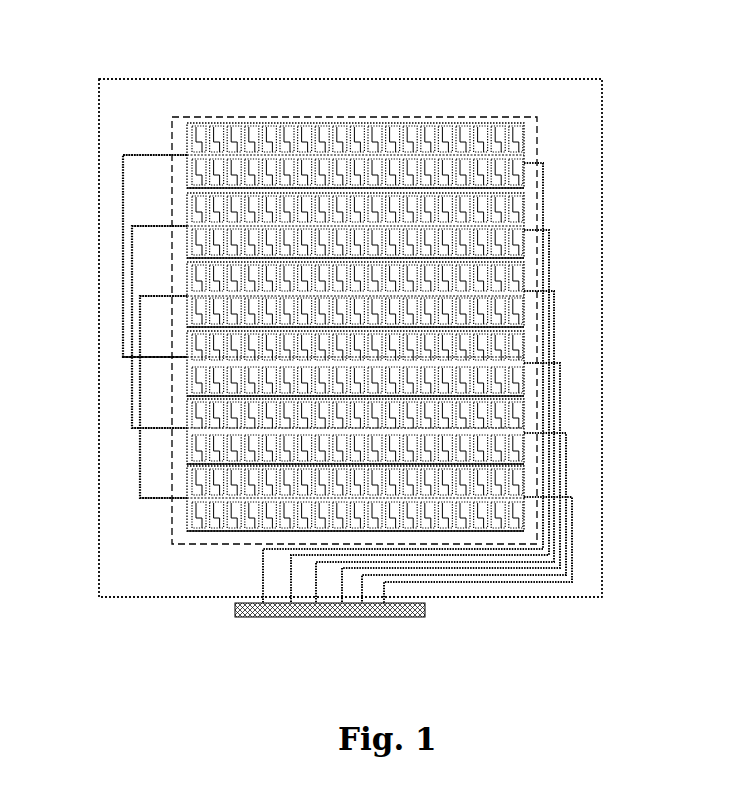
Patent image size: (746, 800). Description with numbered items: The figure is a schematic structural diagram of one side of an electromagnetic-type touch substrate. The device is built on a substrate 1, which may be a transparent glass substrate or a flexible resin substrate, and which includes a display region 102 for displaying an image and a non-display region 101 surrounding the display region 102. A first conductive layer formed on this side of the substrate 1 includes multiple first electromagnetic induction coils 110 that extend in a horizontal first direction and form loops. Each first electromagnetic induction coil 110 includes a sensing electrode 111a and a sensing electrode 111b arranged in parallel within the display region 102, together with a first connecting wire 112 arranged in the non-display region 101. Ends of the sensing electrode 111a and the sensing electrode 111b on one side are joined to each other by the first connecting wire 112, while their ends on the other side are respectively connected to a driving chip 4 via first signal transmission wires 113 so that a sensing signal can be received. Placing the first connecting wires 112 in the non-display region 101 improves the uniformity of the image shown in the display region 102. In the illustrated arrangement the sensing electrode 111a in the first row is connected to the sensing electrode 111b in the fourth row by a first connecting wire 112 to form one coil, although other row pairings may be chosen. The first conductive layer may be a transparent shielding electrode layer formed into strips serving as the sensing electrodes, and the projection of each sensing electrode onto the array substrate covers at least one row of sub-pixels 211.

The substrate 1 is at (542, 77).
The non-display region 101 is at (577, 142).
The display region 102 is at (170, 130).
The first electromagnetic induction coil 110 is at (190, 355).
The sensing electrode 111a is at (355, 150).
The sensing electrode 111b is at (515, 357).
The first connecting wire 112 is at (122, 217).
The first signal transmission wire 113 is at (573, 532).
The sub-pixel 211 is at (492, 278).
The driving chip 4 is at (400, 618).